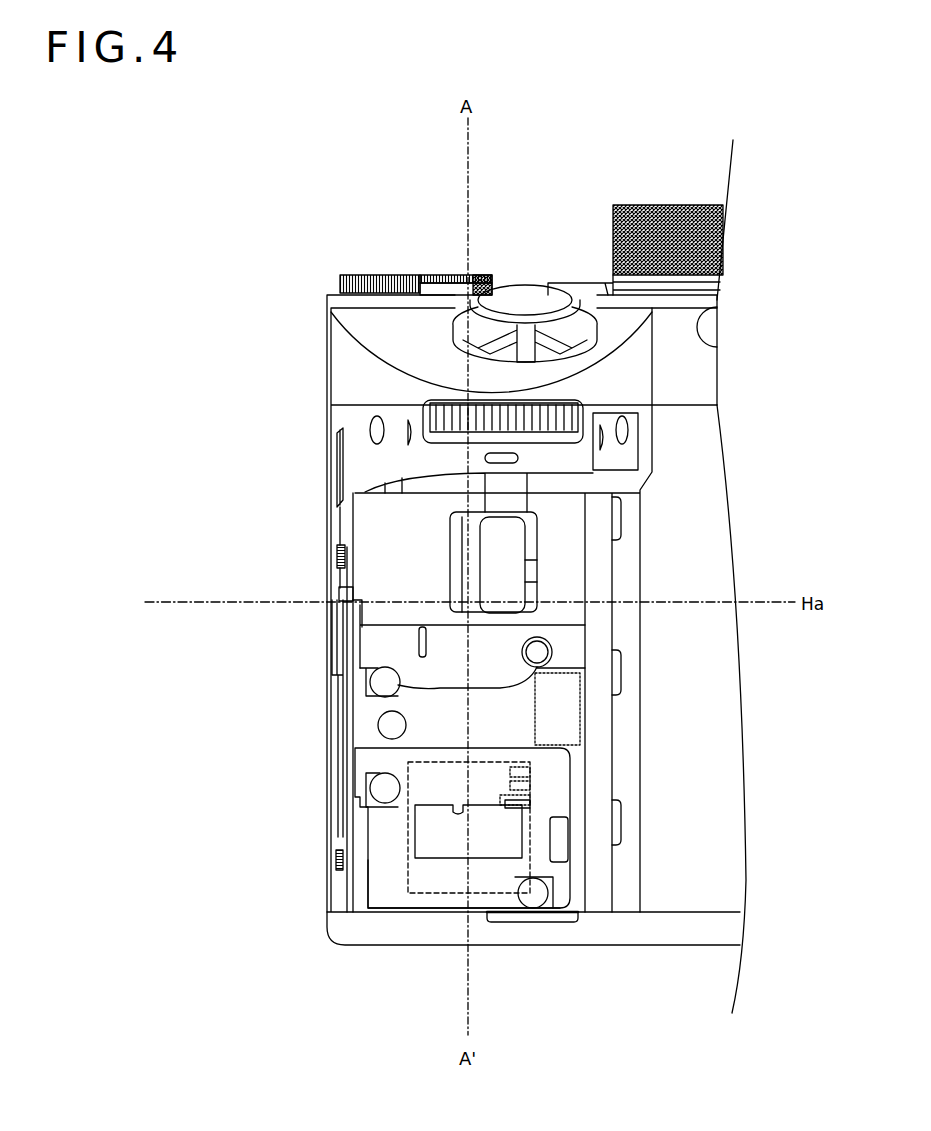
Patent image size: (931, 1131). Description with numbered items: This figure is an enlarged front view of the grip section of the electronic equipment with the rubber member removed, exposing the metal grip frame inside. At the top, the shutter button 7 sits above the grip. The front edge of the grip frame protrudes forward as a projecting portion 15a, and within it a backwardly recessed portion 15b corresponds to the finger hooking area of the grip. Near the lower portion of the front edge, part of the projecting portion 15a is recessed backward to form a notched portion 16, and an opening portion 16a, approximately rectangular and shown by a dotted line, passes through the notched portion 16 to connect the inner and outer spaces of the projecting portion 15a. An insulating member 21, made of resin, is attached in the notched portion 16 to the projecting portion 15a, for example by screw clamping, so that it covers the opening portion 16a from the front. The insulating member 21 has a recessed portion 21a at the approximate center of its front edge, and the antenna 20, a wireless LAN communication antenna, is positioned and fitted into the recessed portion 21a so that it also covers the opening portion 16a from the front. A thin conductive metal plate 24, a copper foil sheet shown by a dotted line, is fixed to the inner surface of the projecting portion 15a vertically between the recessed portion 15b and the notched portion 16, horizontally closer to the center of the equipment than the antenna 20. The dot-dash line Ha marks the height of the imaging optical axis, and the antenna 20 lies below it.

The shutter button 7 is at (526, 300).
The projecting portion 15a is at (356, 440).
The recessed portion 15b is at (420, 540).
The notched portion 16 is at (372, 748).
The opening portion 16a is at (403, 893).
The antenna 20 is at (485, 830).
The insulating member 21 is at (413, 858).
The recessed portion 21a is at (403, 890).
The metal plate 24 is at (535, 708).